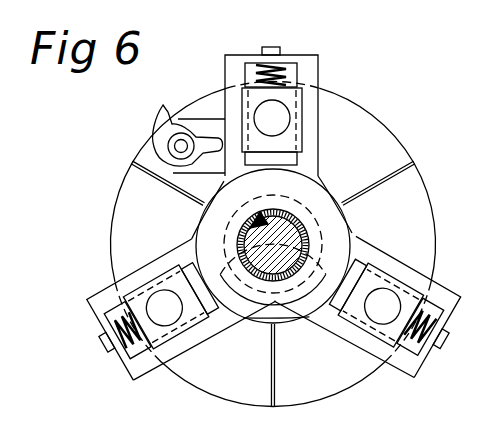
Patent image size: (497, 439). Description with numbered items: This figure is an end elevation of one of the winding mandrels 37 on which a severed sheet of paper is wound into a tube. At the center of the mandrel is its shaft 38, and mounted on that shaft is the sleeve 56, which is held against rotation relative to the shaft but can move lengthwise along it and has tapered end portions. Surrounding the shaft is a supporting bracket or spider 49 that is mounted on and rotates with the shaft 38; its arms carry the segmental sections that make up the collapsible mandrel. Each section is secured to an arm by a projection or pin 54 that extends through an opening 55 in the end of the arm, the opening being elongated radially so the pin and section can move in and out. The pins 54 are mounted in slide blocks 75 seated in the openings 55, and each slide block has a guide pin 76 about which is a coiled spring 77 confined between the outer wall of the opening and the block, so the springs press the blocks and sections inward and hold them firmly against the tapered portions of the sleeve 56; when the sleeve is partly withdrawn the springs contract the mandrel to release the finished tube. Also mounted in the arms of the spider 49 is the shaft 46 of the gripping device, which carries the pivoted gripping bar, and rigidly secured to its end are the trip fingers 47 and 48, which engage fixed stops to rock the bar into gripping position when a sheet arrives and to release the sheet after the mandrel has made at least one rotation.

The winding mandrel 37 is at (319, 404).
The mandrel shaft 38 is at (284, 212).
The gripping bar shaft 46 is at (178, 147).
The trip finger 47 is at (170, 114).
The trip finger 48 is at (214, 136).
The supporting bracket or spider 49 is at (212, 326).
The projections or pins 54 is at (273, 118).
The openings 55 is at (285, 73).
The sleeve 56 is at (282, 224).
The slide blocks 75 is at (292, 139).
The guide pins 76 is at (281, 50).
The coiled springs 77 is at (262, 72).